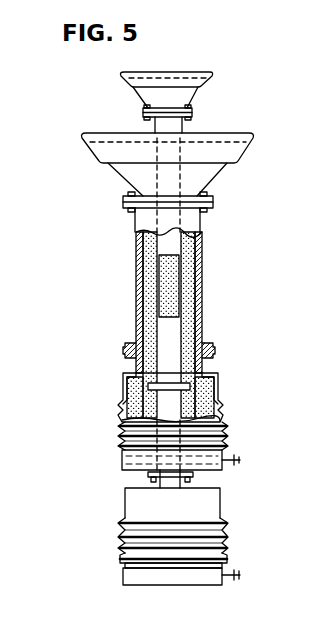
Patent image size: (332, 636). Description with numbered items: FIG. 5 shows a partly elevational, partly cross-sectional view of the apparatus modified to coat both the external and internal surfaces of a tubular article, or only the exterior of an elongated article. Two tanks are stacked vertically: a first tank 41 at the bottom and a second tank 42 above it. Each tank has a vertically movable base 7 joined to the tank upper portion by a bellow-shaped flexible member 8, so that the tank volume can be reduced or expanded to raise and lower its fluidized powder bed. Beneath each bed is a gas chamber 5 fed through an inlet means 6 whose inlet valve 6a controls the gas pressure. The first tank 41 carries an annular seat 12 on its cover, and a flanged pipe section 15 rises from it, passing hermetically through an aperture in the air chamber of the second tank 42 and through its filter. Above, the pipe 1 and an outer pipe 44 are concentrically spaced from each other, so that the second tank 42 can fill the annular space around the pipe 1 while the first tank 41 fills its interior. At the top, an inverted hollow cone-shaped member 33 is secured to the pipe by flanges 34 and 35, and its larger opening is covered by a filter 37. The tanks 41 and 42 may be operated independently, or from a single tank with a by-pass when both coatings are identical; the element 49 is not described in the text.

The pipe 1 is at (150, 290).
The gas chamber 5 is at (122, 469).
The inlet means 6 is at (241, 458).
The inlet valve 6a is at (241, 463).
The base 7 is at (125, 569).
The flexible member 8 is at (125, 527).
The annular seat 12 is at (148, 484).
The pipe 15 is at (220, 381).
The inverted hollow cone-shaped member 33 is at (144, 90).
The flange 34 is at (190, 110).
The flange 35 is at (192, 115).
The filter 37 is at (178, 72).
The first tank 41 is at (121, 587).
The second tank 42 is at (121, 389).
The pipe 44 is at (143, 253).
The connector plate 49 is at (193, 473).